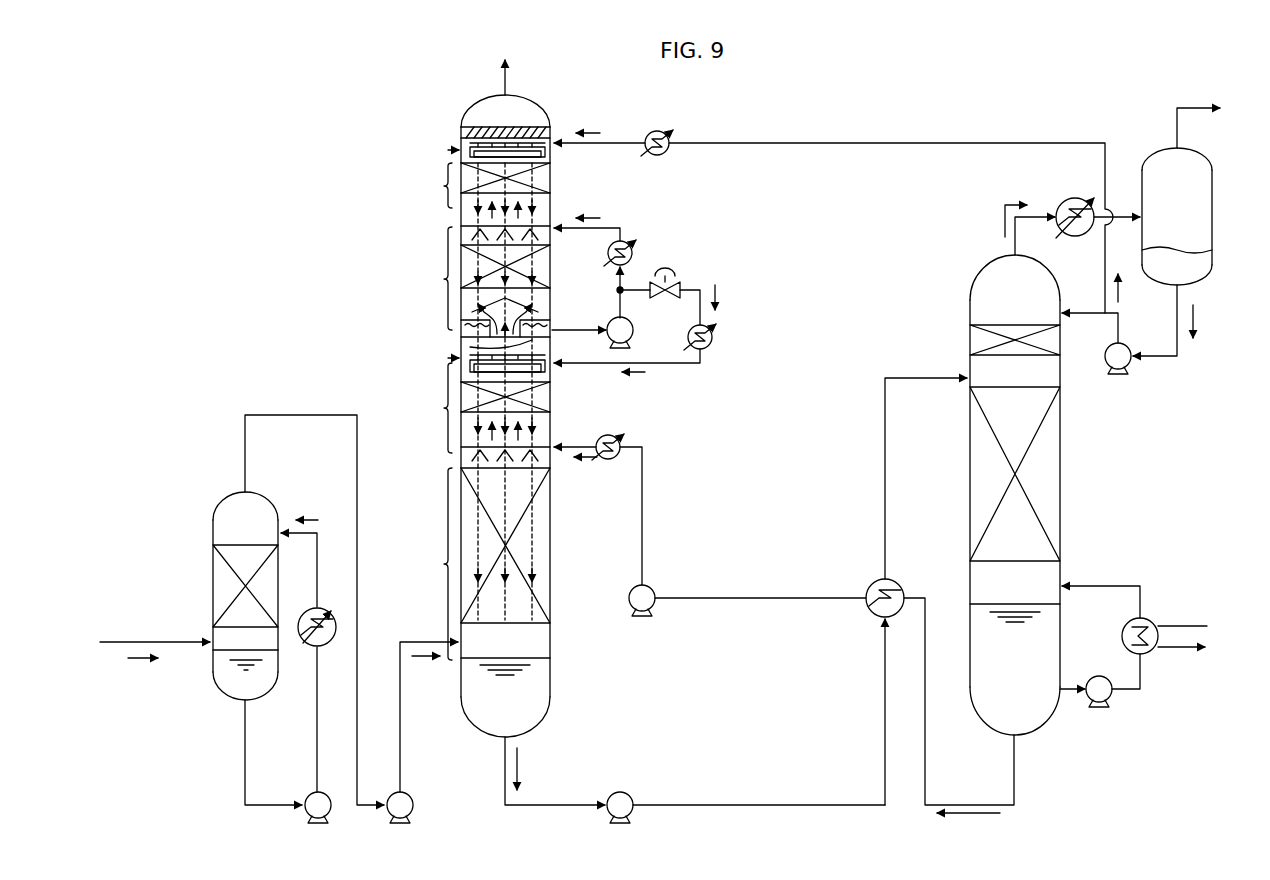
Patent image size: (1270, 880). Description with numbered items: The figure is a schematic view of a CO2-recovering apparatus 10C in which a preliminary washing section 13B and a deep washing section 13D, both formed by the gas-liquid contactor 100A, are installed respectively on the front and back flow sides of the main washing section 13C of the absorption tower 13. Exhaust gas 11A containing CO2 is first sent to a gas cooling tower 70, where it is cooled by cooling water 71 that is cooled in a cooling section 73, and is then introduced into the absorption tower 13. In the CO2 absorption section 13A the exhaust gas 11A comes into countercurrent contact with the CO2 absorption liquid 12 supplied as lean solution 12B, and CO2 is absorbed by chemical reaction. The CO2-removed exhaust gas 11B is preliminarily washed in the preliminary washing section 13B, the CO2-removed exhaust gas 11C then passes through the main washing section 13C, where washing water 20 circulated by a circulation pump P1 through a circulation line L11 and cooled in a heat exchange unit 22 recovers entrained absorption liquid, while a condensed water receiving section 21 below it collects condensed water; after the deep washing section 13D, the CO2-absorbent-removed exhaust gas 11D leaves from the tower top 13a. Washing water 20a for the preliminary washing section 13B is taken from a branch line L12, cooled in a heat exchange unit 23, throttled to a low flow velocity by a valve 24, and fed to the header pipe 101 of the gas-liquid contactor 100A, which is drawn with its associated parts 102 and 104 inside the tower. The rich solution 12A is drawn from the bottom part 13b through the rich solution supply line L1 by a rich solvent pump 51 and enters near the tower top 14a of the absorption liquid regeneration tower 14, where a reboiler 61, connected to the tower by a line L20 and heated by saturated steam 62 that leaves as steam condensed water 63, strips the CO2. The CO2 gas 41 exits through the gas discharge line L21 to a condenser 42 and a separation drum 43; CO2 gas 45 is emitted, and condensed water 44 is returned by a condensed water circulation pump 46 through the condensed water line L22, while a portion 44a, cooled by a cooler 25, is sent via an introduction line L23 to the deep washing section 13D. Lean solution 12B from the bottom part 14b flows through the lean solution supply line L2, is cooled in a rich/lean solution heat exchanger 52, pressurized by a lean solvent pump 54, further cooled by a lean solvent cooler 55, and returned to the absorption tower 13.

The CO2-recovering apparatus 10C is at (836, 126).
The exhaust gas containing CO2 11A is at (152, 666).
The CO2-removed exhaust gas 11B is at (461, 447).
The CO2-removed exhaust gas 11C is at (461, 226).
The CO2-absorbent-removed exhaust gas 11D is at (500, 80).
The CO2 absorption liquid 12 is at (540, 574).
The rich solution 12A is at (518, 766).
The lean solution 12B is at (1006, 816).
The absorption tower 13 is at (441, 124).
The CO2 absorption section 13A is at (446, 564).
The preliminary washing section 13B is at (446, 408).
The main washing section 13C is at (446, 279).
The deep washing section 13D is at (446, 185).
The tower top 13a is at (512, 136).
The bottom part 13b is at (552, 700).
The absorption liquid regeneration tower 14 is at (1070, 468).
The tower top 14a is at (980, 262).
The bottom part 14b is at (1048, 724).
The washing water 20 is at (602, 216).
The washing water 20a is at (718, 298).
The condensed water receiving section 21 is at (542, 325).
The heat exchange unit 22 is at (633, 250).
The heat exchange unit 23 is at (714, 338).
The valve 24 is at (665, 275).
The cooler 25 is at (660, 132).
The CO2 gas 41 is at (1005, 205).
The condenser 42 is at (1076, 198).
The separation drum 43 is at (1212, 216).
The condensed water 44 is at (1200, 325).
The portion of condensed water 44a is at (600, 130).
The CO2 gas 45 is at (1180, 106).
The condensed water circulation pump 46 is at (1128, 348).
The rich solvent pump 51 is at (612, 816).
The rich/lean solution heat exchanger 52 is at (870, 612).
The lean solvent pump 54 is at (650, 588).
The lean solvent cooler 55 is at (622, 442).
The reboiler 61 is at (1147, 616).
The saturated steam 62 is at (1200, 625).
The steam condensed water 63 is at (1196, 656).
The gas cooling tower 70 is at (206, 500).
The cooling water 71 is at (310, 512).
The cooling section 73 is at (305, 650).
The gas-liquid contactor 100A is at (448, 150).
The header pipe 101 is at (517, 125).
The distributor 102 is at (461, 133).
The collector tray 104 is at (548, 155).
The circulation pump P1 is at (634, 330).
The rich solution supply line L1 is at (790, 805).
The lean solution supply line L2 is at (790, 597).
The circulation line L11 is at (630, 240).
The branch line L12 is at (700, 298).
The line L20 is at (1090, 586).
The gas discharge line L21 is at (1122, 214).
The condensed water line L22 is at (1158, 358).
The introduction line L23 is at (632, 140).